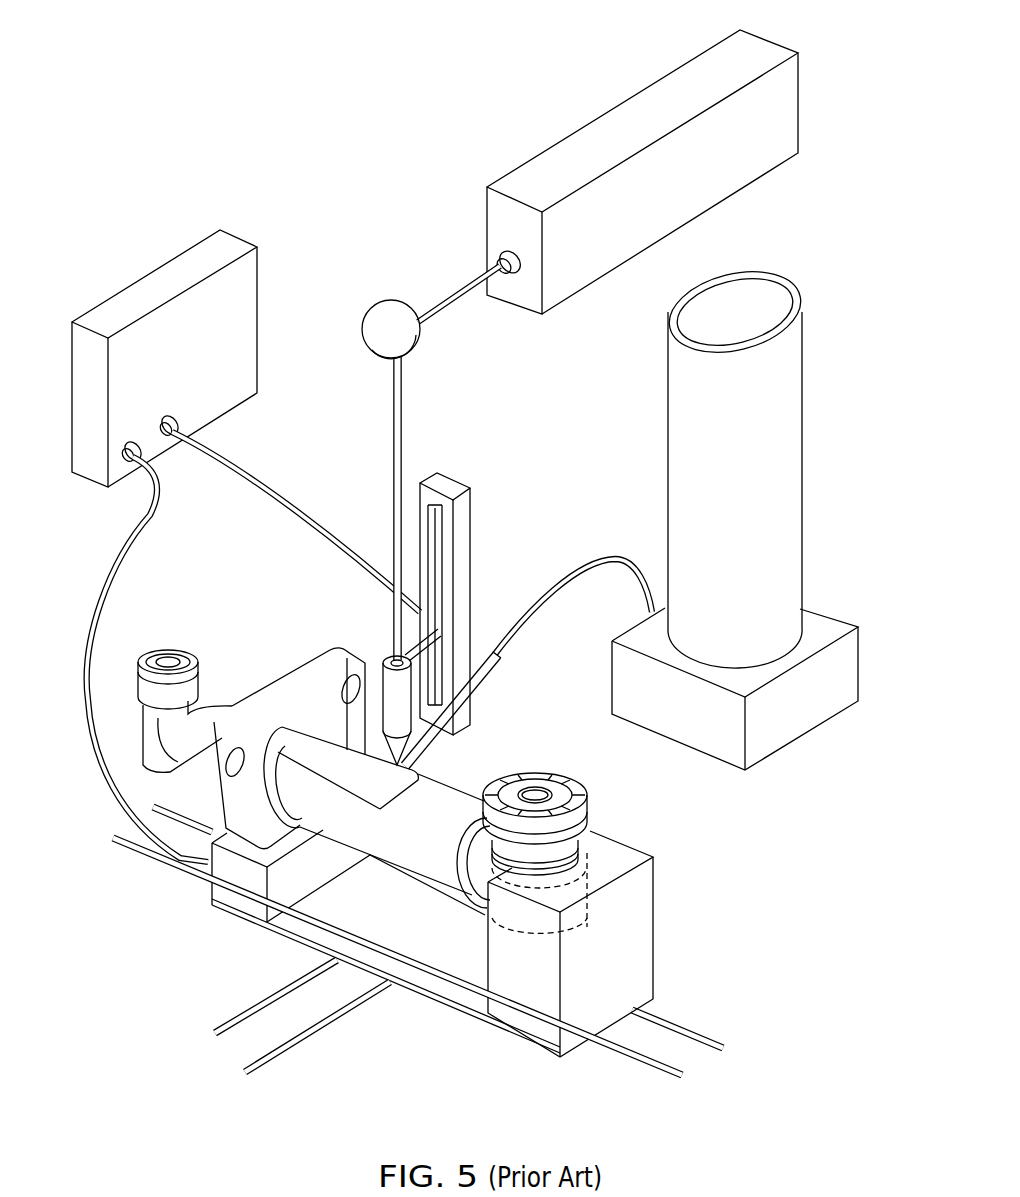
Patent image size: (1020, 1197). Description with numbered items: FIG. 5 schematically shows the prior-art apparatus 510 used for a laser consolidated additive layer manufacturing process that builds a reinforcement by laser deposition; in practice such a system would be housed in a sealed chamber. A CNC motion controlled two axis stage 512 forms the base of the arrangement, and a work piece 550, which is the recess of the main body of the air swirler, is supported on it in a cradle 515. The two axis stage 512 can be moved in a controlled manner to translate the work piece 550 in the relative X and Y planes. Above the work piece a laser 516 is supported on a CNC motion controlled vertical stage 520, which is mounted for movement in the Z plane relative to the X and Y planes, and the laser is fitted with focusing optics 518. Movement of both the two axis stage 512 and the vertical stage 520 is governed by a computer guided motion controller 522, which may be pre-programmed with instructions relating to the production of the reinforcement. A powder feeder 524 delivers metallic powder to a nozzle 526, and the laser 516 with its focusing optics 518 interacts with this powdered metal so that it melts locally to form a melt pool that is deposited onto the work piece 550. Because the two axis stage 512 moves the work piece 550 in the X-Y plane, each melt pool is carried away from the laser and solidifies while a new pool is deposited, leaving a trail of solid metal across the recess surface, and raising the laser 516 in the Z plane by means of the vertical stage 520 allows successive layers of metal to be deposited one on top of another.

The prior art test system 510 is at (343, 190).
The two axis stage 512 is at (465, 998).
The cradle 515 is at (647, 885).
The laser 516 is at (637, 108).
The focusing optics 518 is at (387, 655).
The vertical stage 520 is at (475, 548).
The computer guided motion controller 522 is at (152, 288).
The powder feeder 524 is at (663, 449).
The nozzle 526 is at (488, 670).
The work piece 550 is at (282, 677).